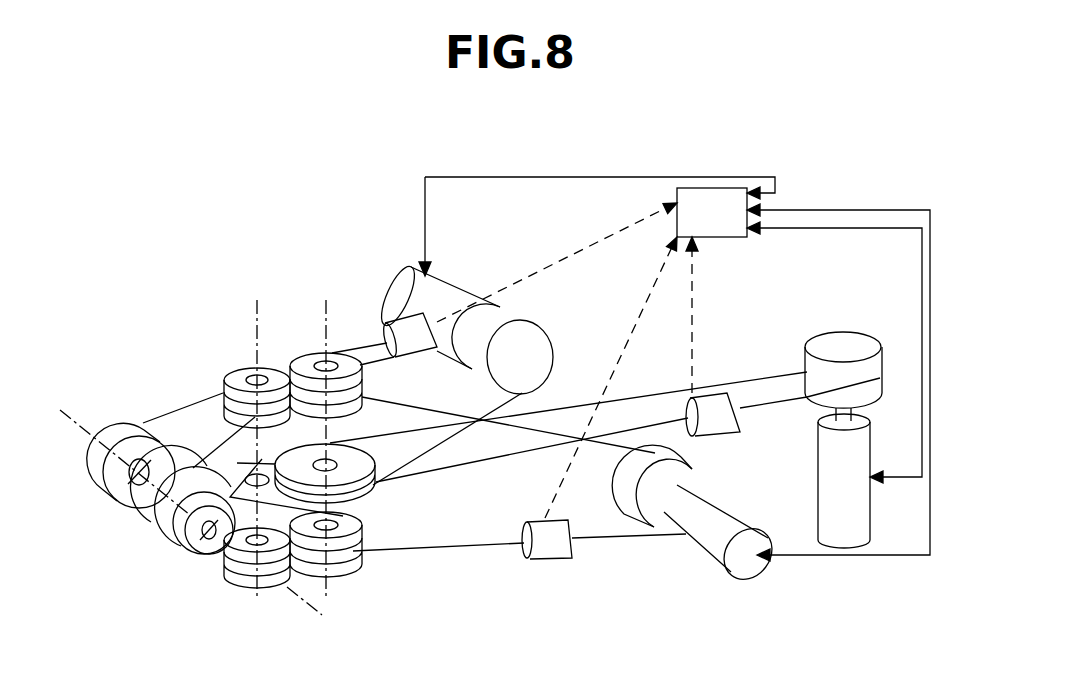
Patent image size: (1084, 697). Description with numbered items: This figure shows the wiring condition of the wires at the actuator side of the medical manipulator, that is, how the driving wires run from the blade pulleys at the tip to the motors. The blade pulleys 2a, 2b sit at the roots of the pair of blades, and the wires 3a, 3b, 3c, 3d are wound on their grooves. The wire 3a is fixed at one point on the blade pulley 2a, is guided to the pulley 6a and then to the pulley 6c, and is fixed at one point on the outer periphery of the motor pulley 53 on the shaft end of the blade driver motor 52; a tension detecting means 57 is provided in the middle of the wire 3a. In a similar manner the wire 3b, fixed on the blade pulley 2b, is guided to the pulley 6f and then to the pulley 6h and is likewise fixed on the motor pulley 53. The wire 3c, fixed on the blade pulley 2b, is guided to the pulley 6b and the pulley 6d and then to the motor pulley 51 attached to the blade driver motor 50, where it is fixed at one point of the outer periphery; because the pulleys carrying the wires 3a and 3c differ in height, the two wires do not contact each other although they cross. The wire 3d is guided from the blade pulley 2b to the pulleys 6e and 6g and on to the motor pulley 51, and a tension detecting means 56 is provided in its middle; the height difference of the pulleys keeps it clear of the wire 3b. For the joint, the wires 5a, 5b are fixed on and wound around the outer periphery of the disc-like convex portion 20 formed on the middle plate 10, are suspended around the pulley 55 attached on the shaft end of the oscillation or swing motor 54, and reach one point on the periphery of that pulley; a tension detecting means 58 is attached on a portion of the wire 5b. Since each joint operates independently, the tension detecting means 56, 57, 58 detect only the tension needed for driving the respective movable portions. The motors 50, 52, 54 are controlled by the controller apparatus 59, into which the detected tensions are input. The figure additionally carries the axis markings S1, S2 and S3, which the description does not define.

The blade pulley 2a is at (118, 495).
The blade pulley 2b is at (180, 547).
The wire 3a is at (508, 548).
The wire 3b is at (520, 430).
The wire 3c is at (525, 400).
The wire 3d is at (360, 343).
The wire 5a is at (700, 393).
The wire 5b is at (762, 400).
The pulley 6a is at (233, 577).
The pulley 6b is at (273, 573).
The pulley 6c is at (348, 562).
The pulley 6d is at (353, 545).
The pulley 6e is at (228, 372).
The pulley 6f is at (222, 405).
The pulley 6g is at (372, 370).
The pulley 6h is at (378, 393).
The middle plate 10 is at (373, 477).
The convex portion 20 is at (358, 562).
The blade driver motor 50 is at (448, 268).
The motor pulley 51 is at (535, 335).
The blade driver motor 52 is at (710, 550).
The motor pulley 53 is at (633, 507).
The oscillation or swing motor 54 is at (865, 458).
The pulley 55 is at (848, 335).
The tension detecting means 56 is at (398, 323).
The tension detecting means 57 is at (560, 552).
The tension detecting means 58 is at (717, 437).
The controller apparatus 59 is at (712, 200).
The first axis S1 is at (191, 505).
The second axis S2 is at (239, 450).
The third axis S3 is at (306, 450).